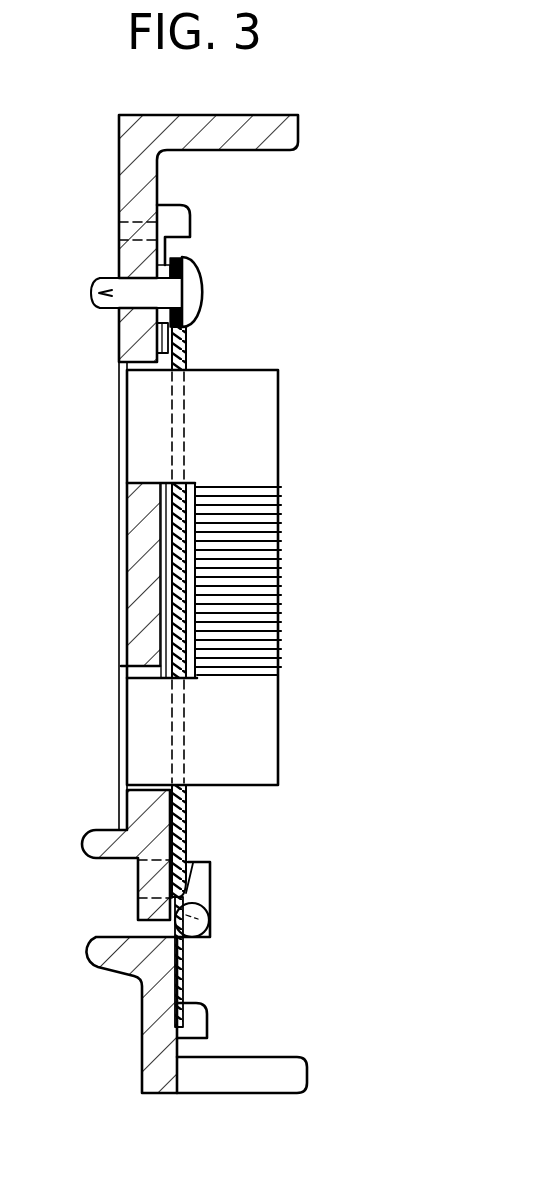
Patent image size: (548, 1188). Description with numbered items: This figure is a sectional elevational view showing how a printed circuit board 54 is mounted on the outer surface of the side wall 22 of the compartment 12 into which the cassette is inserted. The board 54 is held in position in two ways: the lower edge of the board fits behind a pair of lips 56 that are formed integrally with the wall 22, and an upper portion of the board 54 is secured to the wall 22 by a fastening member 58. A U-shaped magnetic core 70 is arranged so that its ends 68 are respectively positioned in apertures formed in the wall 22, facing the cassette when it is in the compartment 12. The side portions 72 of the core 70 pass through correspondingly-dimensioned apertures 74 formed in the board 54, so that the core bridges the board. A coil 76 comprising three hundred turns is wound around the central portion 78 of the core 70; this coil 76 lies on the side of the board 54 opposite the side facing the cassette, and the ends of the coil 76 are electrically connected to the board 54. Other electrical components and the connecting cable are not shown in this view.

The compartment 12 is at (284, 113).
The side wall 22 is at (158, 1032).
The printed circuit board 54 is at (190, 342).
The lips 56 is at (200, 878).
The fastening member 58 is at (192, 290).
The ends of the magnetic core 68 is at (120, 413).
The U-shaped magnetic core 70 is at (240, 453).
The side portions of the core 72 is at (152, 458).
The apertures in the board 74 is at (181, 370).
The coil 76 is at (240, 498).
The central portion of the core 78 is at (210, 488).